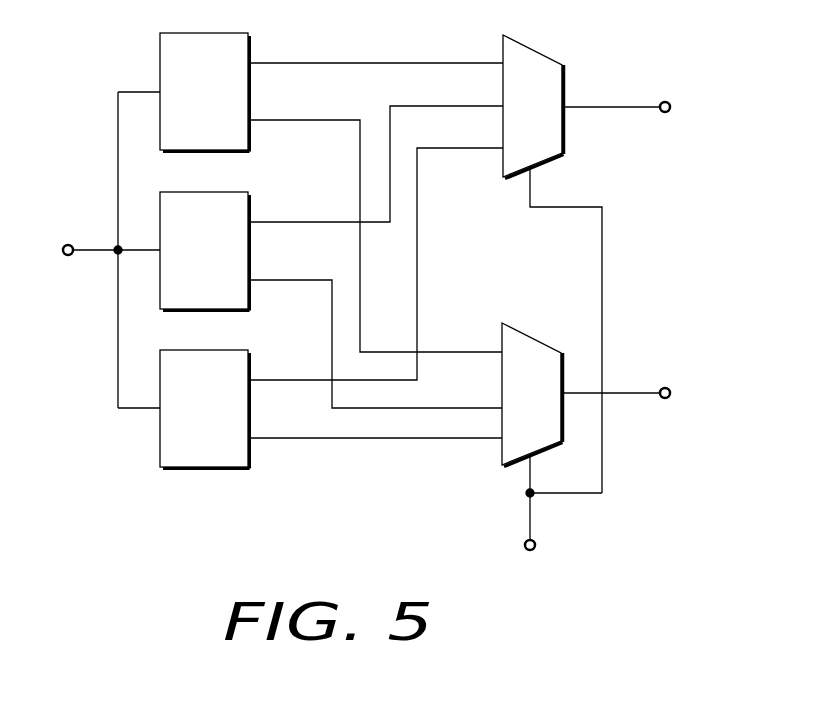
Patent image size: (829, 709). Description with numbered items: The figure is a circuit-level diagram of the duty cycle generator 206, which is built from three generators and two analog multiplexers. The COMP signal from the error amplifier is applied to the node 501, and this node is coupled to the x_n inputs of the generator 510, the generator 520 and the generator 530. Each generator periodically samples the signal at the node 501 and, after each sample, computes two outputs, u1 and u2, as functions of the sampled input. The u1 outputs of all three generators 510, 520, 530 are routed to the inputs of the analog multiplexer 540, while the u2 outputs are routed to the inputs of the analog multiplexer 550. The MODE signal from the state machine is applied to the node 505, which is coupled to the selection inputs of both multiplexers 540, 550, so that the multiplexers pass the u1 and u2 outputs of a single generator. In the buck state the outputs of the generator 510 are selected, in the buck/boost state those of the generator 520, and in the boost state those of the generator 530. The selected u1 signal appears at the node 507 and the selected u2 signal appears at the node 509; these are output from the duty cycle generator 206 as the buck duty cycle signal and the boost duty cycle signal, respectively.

The duty cycle generator 206 is at (369, 286).
The node 501 is at (68, 244).
The node 505 is at (520, 545).
The node 507 is at (665, 100).
The node 509 is at (665, 387).
The generator 510 is at (207, 71).
The generator 520 is at (207, 230).
The generator 530 is at (207, 388).
The analog multiplexer 540 is at (525, 45).
The analog multiplexer 550 is at (524, 333).